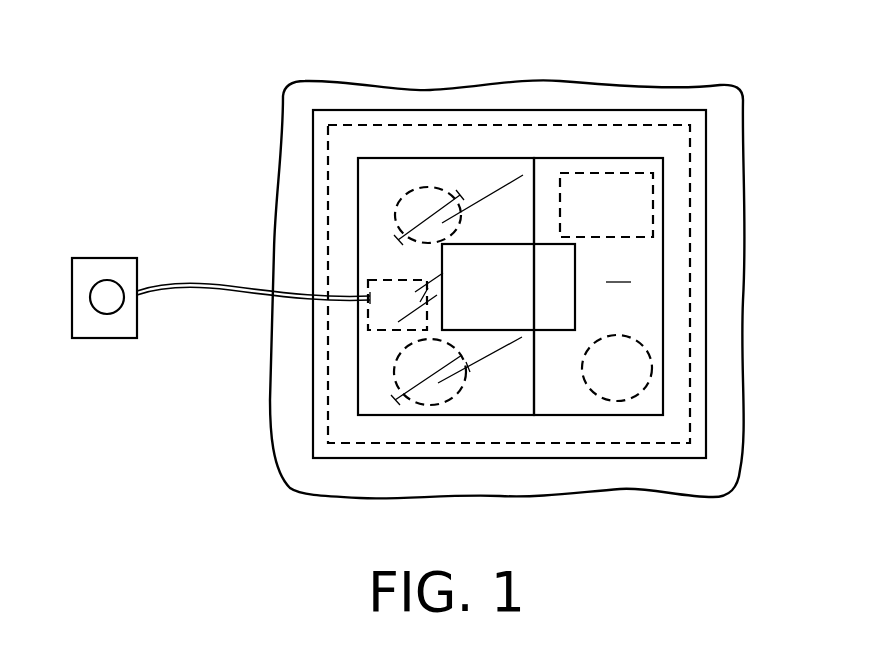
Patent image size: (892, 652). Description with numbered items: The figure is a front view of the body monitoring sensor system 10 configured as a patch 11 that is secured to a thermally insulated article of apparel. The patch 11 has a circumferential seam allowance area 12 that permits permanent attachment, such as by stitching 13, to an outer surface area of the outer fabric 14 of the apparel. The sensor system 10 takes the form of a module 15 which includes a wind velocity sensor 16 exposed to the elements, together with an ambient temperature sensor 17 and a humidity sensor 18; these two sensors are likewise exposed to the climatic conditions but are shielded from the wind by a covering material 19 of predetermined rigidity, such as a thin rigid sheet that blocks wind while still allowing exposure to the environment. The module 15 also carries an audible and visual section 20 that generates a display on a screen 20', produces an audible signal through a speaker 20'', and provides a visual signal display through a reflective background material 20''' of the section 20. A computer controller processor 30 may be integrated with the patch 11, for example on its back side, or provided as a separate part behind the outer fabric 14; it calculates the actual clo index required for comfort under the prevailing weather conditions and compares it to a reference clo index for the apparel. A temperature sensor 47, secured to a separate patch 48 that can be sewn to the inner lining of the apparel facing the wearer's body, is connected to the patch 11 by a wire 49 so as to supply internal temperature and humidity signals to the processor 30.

The body monitoring sensor system 10 is at (605, 192).
The patch 11 is at (707, 180).
The circumferential seam allowance area 12 is at (495, 137).
The stitching 13 is at (457, 125).
The outer fabric 14 is at (375, 470).
The module 15 is at (665, 163).
The wind velocity sensor 16 is at (521, 299).
The ambient temperature sensor 17 is at (395, 215).
The humidity sensor 18 is at (393, 373).
The covering material 19 is at (375, 270).
The audible and visual section 20 is at (598, 286).
The screen 20' is at (689, 205).
The speaker 20'' is at (705, 363).
The reflective background material 20''' is at (729, 270).
The computer controller processor 30 is at (368, 316).
The temperature sensor 47 is at (103, 292).
The patch 48 is at (103, 325).
The wire 49 is at (160, 295).